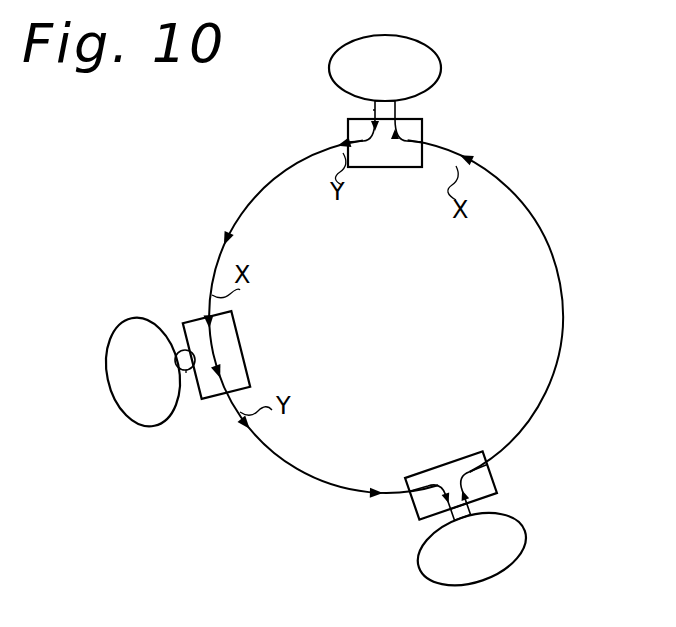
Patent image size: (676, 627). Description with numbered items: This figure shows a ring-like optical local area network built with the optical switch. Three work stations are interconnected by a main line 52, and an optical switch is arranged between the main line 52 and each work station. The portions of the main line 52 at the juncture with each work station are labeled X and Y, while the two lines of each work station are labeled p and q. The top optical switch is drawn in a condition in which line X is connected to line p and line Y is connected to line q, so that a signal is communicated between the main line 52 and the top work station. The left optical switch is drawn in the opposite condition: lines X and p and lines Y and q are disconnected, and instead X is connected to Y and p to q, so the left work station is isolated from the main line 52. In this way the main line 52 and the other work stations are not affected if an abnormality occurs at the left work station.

The main line 52 is at (563, 303).